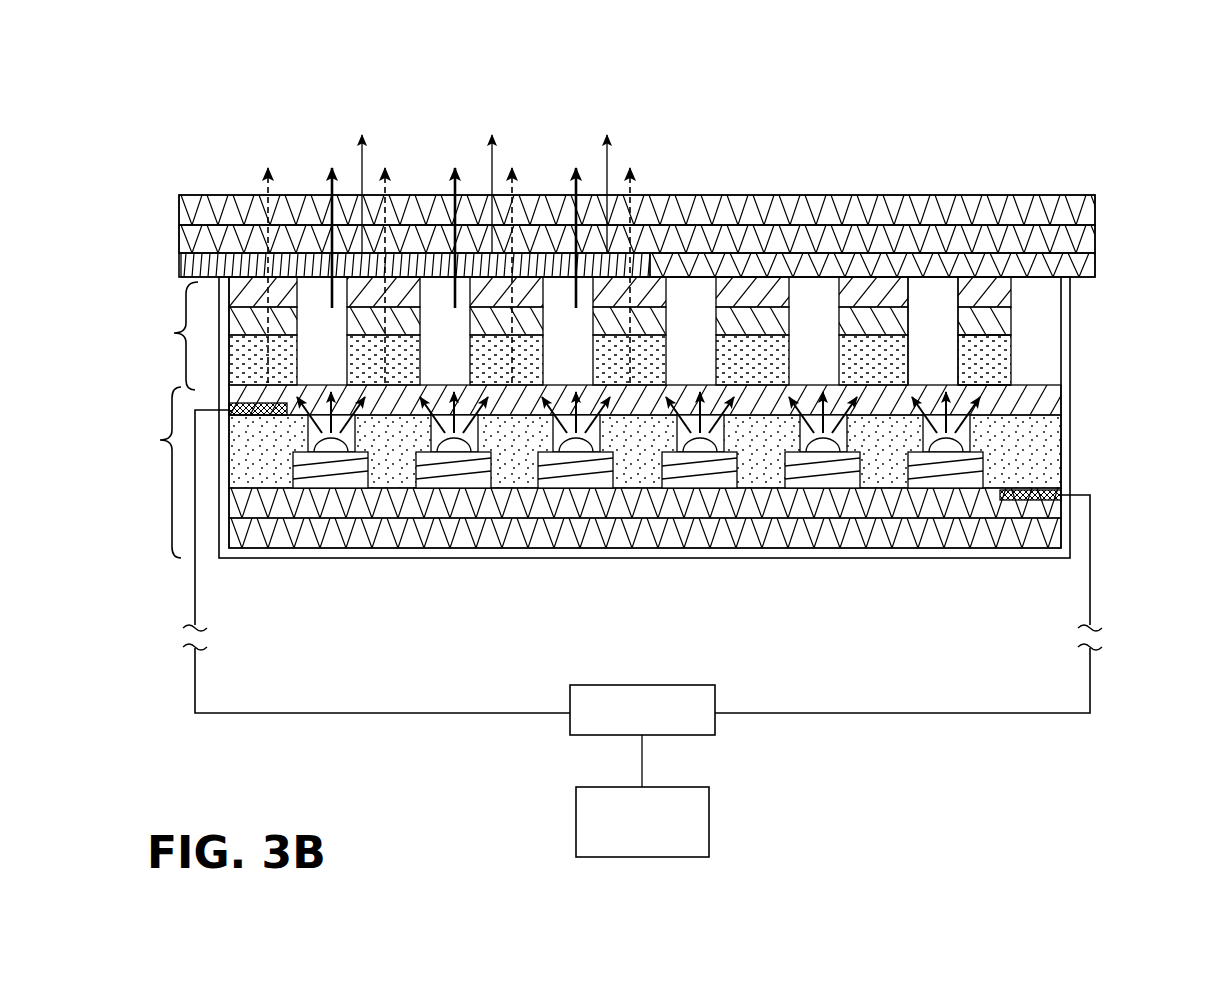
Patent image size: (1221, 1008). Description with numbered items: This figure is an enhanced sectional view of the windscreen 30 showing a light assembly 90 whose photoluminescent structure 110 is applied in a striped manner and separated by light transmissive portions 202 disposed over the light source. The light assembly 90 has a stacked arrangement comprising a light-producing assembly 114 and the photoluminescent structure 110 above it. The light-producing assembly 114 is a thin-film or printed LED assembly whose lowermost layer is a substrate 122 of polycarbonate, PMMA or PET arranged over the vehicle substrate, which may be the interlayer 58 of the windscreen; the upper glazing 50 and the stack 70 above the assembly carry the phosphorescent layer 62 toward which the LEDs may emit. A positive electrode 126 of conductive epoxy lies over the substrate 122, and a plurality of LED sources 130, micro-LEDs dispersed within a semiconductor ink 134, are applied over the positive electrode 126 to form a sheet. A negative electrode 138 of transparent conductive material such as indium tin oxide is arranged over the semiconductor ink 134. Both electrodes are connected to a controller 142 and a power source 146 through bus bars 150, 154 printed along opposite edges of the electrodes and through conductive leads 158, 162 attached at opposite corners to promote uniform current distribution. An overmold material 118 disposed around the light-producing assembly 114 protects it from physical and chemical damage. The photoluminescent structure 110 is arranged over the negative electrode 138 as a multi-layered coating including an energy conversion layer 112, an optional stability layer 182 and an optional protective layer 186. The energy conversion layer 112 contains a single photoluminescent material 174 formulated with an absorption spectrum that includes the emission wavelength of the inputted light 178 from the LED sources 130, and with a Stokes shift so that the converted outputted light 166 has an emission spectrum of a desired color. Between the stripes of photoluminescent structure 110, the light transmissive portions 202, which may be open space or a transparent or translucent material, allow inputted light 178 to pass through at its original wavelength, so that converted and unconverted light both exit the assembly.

The windscreen 30 is at (1067, 79).
The first plate layer 50 is at (200, 212).
The interlayer 58 is at (190, 232).
The phosphorescent layer 62 is at (187, 262).
The top plate 70 is at (1098, 268).
The light assembly 90 is at (1187, 397).
The photoluminescent structure 110 is at (160, 336).
The energy conversion layer 112 is at (1010, 352).
The light-producing assembly 114 is at (147, 472).
The overmold material 118 is at (1095, 252).
The substrate 122 is at (1045, 533).
The positive electrode 126 is at (1043, 510).
The LED sources 130 is at (343, 472).
The semiconductor ink 134 is at (1042, 470).
The negative electrode 138 is at (1045, 395).
The controller 142 is at (718, 727).
The power source 146 is at (710, 806).
The bus bar 150 is at (1060, 498).
The bus bar 154 is at (235, 404).
The conductive lead 158 is at (1095, 598).
The conductive lead 162 is at (194, 595).
The outputted light 166 is at (383, 190).
The photoluminescent material 174 is at (1010, 376).
The inputted light 178 is at (325, 190).
The stability layer 182 is at (1010, 343).
The protective layer 186 is at (1003, 293).
The light transmissive portions 202 is at (1008, 322).